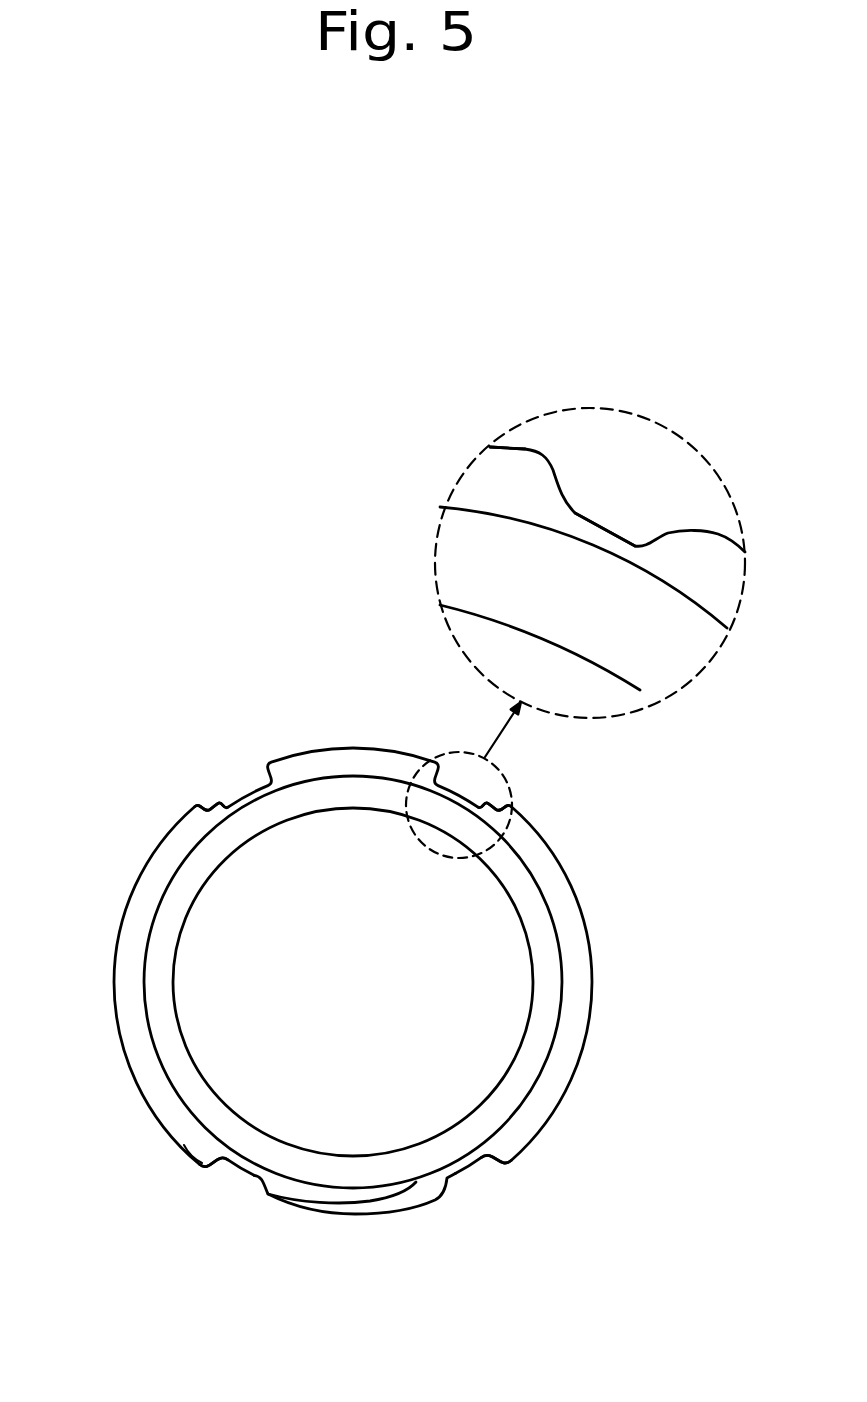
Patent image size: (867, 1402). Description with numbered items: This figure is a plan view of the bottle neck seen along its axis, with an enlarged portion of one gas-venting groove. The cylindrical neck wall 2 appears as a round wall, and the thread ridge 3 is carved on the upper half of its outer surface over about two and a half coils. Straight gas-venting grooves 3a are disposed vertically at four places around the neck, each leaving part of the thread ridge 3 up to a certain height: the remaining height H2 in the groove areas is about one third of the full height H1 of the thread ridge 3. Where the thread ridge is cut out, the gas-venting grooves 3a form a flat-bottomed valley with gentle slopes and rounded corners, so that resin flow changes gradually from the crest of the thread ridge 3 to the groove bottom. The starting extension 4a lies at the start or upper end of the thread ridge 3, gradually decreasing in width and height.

The cylindrical neck wall 2 is at (510, 1100).
The thread ridge 3 is at (572, 936).
The gas-venting grooves 3a is at (246, 792).
The starting extension 4a is at (325, 1192).
The full height of the thread ridge H1 is at (483, 578).
The remaining height in the groove areas H2 is at (572, 598).